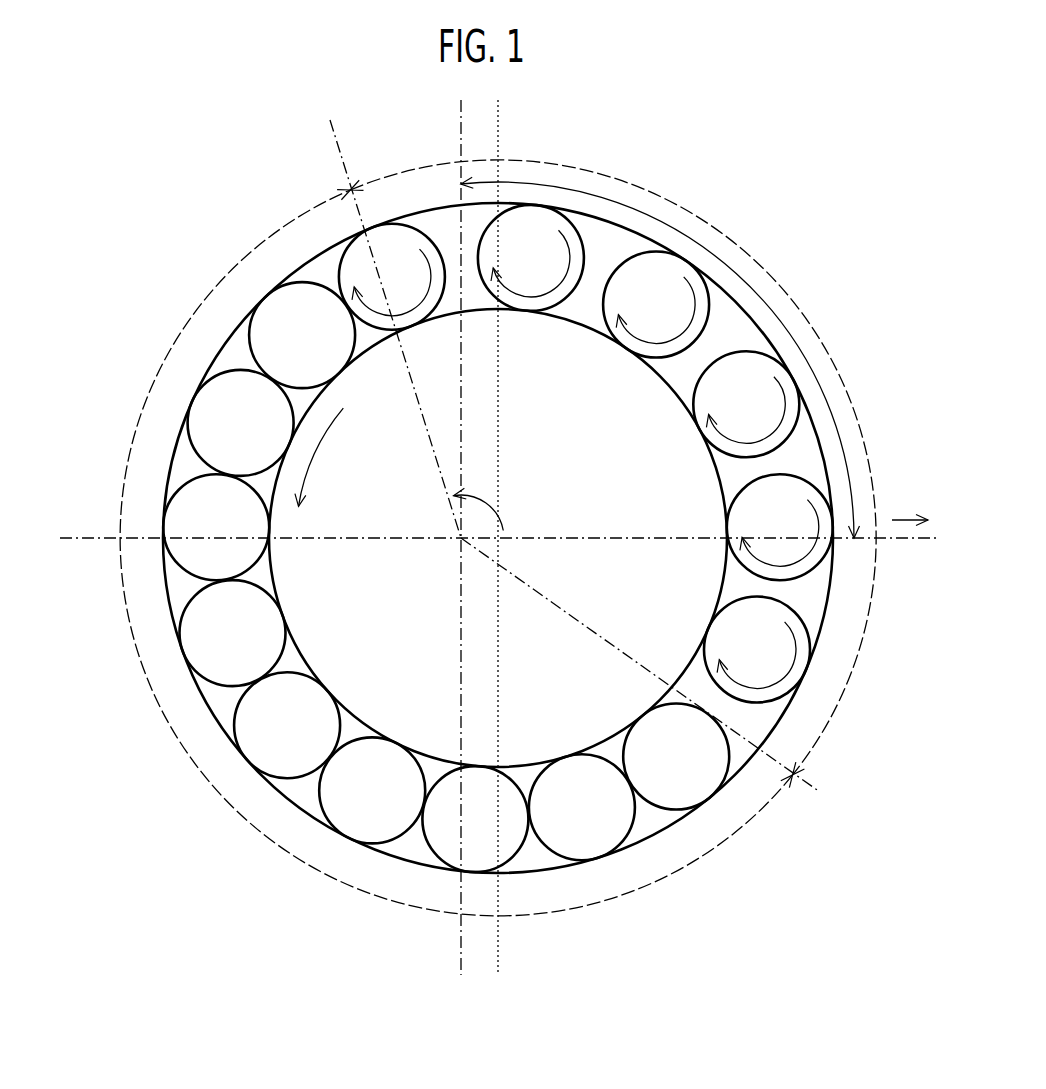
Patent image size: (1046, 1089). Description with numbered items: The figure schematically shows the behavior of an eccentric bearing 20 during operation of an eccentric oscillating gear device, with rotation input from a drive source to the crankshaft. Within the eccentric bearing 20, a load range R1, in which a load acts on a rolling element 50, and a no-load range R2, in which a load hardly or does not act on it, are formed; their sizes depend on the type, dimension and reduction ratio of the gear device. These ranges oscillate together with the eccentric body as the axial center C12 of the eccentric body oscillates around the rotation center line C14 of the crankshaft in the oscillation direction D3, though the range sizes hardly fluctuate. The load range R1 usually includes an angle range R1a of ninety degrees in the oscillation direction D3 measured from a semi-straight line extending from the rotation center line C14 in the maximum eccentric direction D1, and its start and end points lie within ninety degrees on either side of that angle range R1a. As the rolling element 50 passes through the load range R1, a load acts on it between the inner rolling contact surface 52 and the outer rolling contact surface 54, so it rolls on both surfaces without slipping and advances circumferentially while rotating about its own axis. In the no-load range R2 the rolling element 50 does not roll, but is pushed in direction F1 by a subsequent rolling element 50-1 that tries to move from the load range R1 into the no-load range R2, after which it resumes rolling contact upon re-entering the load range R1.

The eccentric bearing 20 is at (498, 592).
The rolling element 50 is at (260, 622).
The subsequent rolling element 50-1 is at (412, 320).
The inner rolling contact surface 52 is at (578, 762).
The outer rolling contact surface 54 is at (657, 822).
The axial center of eccentric body C12 is at (498, 538).
The rotation center line of crankshaft C14 is at (461, 538).
The maximum eccentric direction D1 is at (910, 517).
The oscillation direction D3 is at (485, 500).
The pushing direction F1 is at (313, 452).
The load range R1 is at (815, 330).
The angle range R1a is at (723, 258).
The no-load range R2 is at (190, 762).